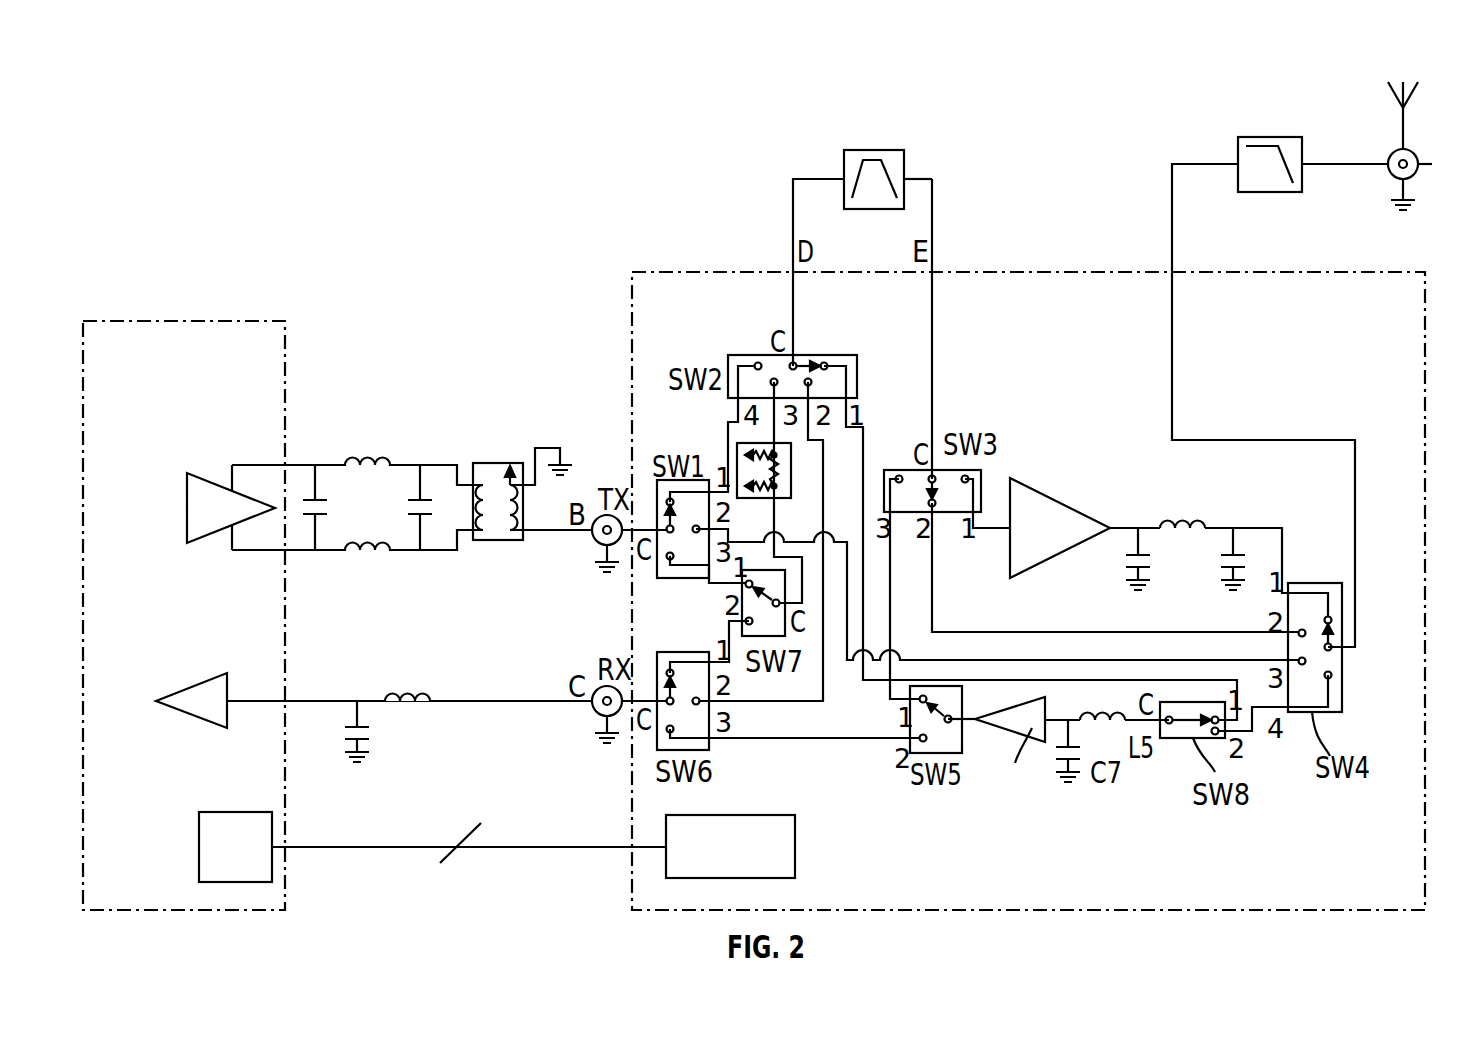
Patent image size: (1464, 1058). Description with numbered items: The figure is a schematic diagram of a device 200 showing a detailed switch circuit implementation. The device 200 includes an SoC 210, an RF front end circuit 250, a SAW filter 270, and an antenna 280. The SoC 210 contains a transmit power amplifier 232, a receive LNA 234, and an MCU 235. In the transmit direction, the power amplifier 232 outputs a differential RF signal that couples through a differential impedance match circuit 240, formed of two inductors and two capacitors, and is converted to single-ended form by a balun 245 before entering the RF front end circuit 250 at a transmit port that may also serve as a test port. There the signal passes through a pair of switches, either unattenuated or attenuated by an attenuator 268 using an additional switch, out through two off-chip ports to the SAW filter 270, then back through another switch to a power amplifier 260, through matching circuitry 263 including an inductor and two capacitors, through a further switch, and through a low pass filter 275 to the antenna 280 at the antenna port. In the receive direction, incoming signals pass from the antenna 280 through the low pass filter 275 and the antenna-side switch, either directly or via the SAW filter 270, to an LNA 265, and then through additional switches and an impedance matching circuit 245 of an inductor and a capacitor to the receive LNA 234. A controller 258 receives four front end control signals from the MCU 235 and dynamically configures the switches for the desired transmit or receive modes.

The device 200 is at (178, 130).
The SoC 210 is at (152, 320).
The transmit power amplifier 232 is at (182, 510).
The receive LNA 234 is at (192, 682).
The MCU 235 is at (235, 812).
The differential impedance match circuit 240 is at (385, 395).
The balun 245 is at (500, 541).
The RF front end circuit 250 is at (660, 270).
The controller 258 is at (795, 847).
The power amplifier 260 is at (1070, 510).
The matching circuitry 263 is at (1205, 480).
The LNA 265 is at (1010, 725).
The attenuator 268 is at (791, 470).
The SAW filter 270 is at (875, 150).
The low pass filter 275 is at (1270, 137).
The antenna 280 is at (1413, 95).